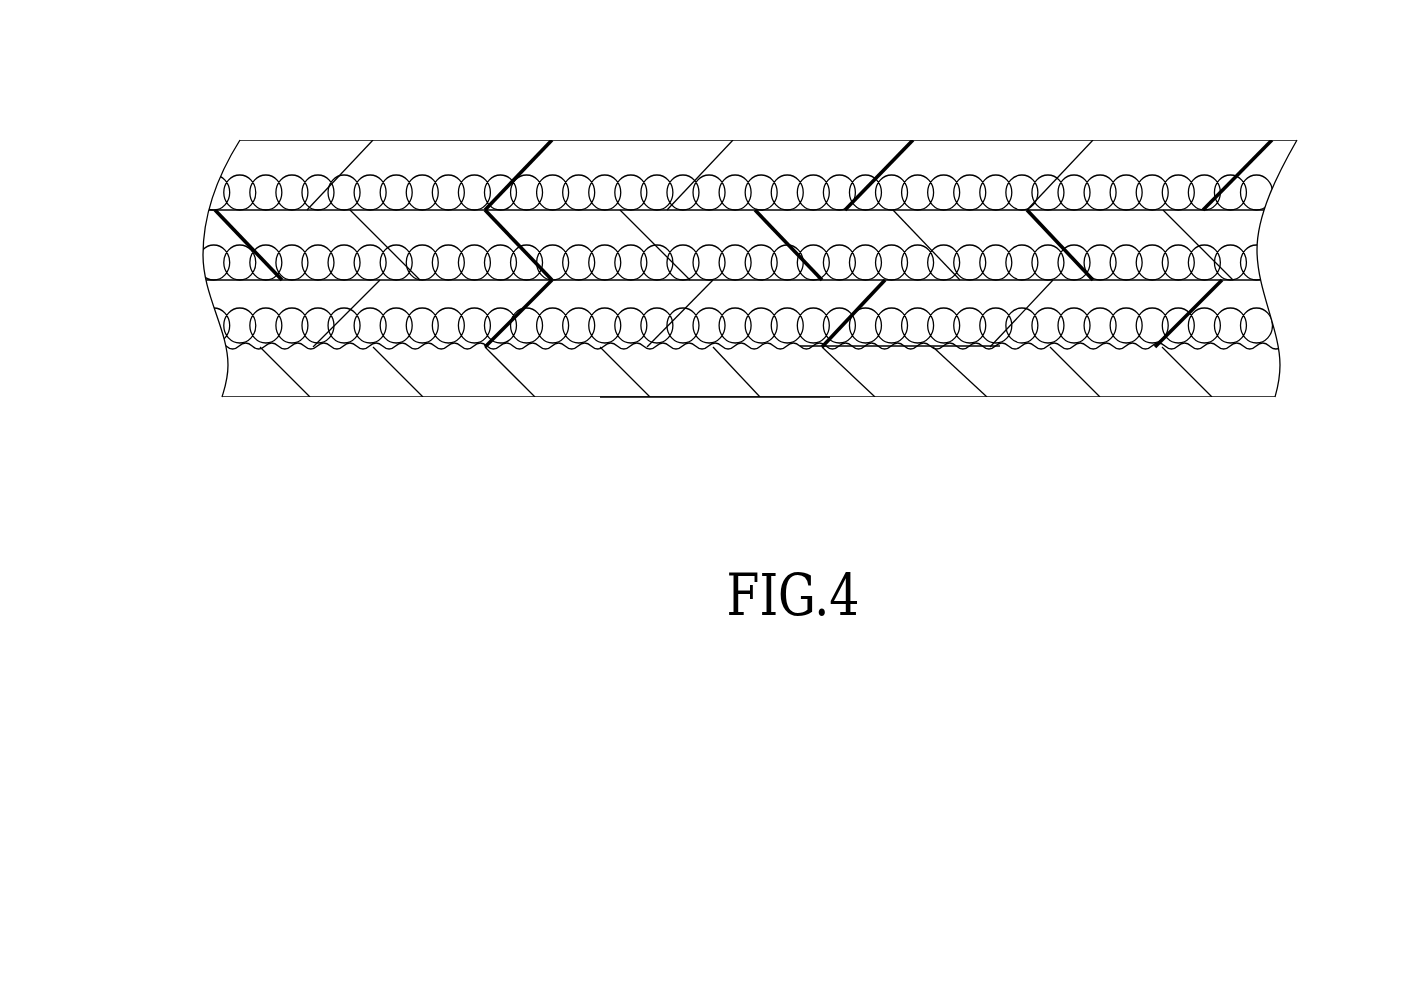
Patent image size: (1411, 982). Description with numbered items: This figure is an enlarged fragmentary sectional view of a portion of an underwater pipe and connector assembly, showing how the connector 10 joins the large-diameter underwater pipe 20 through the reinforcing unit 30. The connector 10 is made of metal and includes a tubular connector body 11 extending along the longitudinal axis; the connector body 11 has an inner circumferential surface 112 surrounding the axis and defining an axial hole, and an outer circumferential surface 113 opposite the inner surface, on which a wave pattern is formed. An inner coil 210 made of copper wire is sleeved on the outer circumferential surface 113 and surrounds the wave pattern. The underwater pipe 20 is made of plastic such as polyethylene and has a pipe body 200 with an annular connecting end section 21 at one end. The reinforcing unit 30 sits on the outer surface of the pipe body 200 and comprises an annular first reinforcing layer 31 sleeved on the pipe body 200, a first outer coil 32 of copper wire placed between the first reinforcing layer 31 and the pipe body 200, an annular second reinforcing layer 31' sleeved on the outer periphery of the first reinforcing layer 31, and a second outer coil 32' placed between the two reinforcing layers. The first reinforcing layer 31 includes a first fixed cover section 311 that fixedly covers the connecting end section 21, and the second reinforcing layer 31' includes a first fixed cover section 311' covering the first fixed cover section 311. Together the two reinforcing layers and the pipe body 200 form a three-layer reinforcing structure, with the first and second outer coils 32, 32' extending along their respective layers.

The connector 10 is at (1151, 392).
The connector body 11 is at (1245, 377).
The inner circumferential surface 112 is at (712, 398).
The outer circumferential surface 113 is at (903, 347).
The large-diameter underwater pipe 20 is at (216, 295).
The connecting end section 21 is at (450, 300).
The pipe body 200 is at (1264, 289).
The inner coil 210 is at (1255, 306).
The reinforcing unit 30 is at (595, 126).
The first reinforcing layer 31 is at (700, 145).
The first fixed cover section 311 is at (735, 139).
The second reinforcing layer 31' is at (878, 131).
The first fixed cover section 311' is at (791, 163).
The first outer coil 32 is at (793, 224).
The second outer coil 32' is at (722, 176).